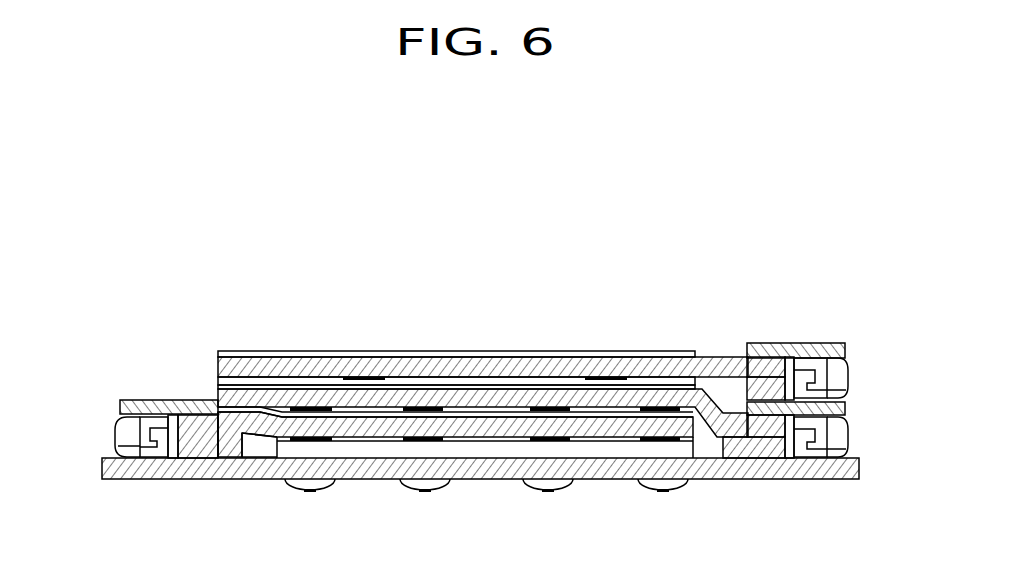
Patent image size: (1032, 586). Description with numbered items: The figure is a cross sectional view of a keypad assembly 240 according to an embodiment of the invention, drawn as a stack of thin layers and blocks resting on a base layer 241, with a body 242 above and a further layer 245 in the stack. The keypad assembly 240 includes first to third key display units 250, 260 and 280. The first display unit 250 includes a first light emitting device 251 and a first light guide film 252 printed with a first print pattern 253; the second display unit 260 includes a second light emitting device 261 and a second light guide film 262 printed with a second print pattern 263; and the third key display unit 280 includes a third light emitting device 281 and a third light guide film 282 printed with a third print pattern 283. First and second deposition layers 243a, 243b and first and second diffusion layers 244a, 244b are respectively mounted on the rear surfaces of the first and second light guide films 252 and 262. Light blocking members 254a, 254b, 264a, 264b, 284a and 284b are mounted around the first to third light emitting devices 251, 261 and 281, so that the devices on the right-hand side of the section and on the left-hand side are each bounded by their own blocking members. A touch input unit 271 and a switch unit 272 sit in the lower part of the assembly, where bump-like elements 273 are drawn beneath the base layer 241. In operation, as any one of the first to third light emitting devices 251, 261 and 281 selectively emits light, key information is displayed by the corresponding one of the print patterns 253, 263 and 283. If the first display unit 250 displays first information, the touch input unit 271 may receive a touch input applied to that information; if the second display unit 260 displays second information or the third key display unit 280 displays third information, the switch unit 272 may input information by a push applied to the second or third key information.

The keypad assembly 240 is at (150, 347).
The base substrate 241 is at (860, 468).
The upper substrate body 242 is at (505, 365).
The first deposition layer 243a is at (557, 387).
The second deposition layer 243b is at (242, 405).
The first diffusion layer 244a is at (372, 385).
The second diffusion layer 244b is at (317, 418).
The lower substrate body 245 is at (374, 447).
The first key display unit 250 is at (752, 283).
The first light emitting device 251 is at (806, 375).
The first light guide film 252 is at (768, 368).
The first print pattern 253 is at (605, 378).
The light blocking member 254a is at (845, 350).
The light blocking member 254b is at (752, 390).
The second key display unit 260 is at (753, 537).
The second light emitting device 261 is at (805, 448).
The second light guide film 262 is at (762, 440).
The second print pattern 263 is at (433, 408).
The light blocking member 264a is at (845, 406).
The light blocking member 264b is at (740, 450).
The touch input unit 271 is at (486, 460).
The switch unit 272 is at (560, 483).
The ball land pad 273 is at (547, 493).
The third key display unit 280 is at (135, 537).
The third light emitting device 281 is at (152, 448).
The third light guide film 282 is at (193, 450).
The third print pattern 283 is at (308, 448).
The light blocking member 284a is at (120, 403).
The light blocking member 284b is at (220, 450).